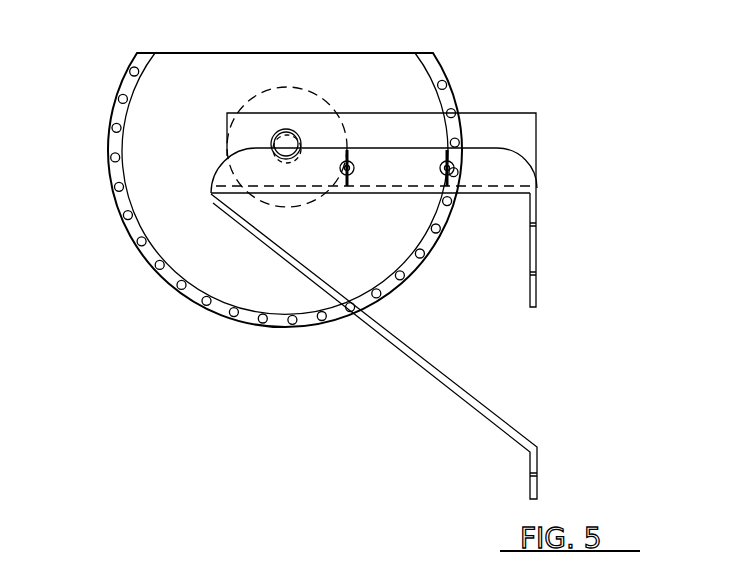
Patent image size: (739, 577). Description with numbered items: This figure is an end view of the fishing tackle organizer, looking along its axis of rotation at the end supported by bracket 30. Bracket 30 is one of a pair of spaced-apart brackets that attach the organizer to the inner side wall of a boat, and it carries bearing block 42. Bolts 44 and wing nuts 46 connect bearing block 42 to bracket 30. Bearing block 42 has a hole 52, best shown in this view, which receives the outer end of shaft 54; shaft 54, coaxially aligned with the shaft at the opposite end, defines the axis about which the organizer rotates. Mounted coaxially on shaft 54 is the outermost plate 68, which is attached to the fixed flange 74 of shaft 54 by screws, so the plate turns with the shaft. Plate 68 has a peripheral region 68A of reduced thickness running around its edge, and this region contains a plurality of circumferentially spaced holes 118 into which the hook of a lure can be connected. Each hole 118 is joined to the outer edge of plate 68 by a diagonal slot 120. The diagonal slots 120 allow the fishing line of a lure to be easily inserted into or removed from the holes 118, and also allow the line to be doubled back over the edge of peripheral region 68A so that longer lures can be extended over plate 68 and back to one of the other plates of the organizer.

The plate 68 is at (388, 52).
The peripheral region 68A is at (122, 222).
The holes 118 is at (440, 74).
The diagonal slots 120 is at (449, 89).
The fixed flange 74 is at (247, 93).
The hole 52 is at (297, 138).
The shaft 54 is at (275, 140).
The bearing block 42 is at (529, 128).
The bracket 30 is at (538, 244).
The bolts 44 is at (355, 173).
The wing nuts 46 is at (350, 162).